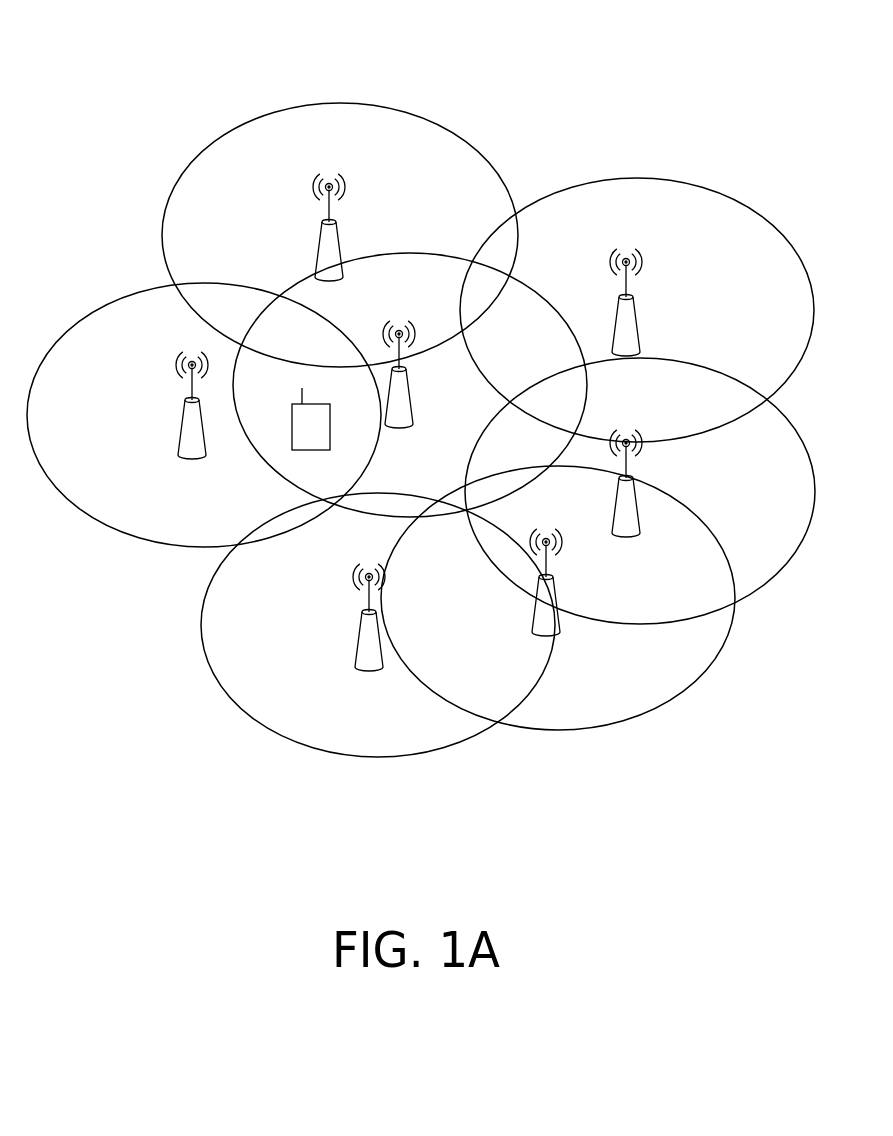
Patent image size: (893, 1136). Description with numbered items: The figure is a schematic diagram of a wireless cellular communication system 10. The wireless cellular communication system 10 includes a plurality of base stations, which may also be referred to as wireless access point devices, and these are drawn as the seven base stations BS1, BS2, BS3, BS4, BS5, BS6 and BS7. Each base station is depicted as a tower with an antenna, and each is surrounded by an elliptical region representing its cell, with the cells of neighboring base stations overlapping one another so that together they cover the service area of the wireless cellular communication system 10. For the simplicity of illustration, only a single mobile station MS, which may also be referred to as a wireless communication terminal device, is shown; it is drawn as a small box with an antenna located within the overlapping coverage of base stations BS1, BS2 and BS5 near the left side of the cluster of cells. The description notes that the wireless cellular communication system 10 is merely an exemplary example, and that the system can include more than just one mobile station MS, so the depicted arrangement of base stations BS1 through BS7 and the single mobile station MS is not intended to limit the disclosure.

The wireless cellular communication system 10 is at (420, 386).
The base station BS1 is at (204, 415).
The base station BS2 is at (340, 235).
The base station BS3 is at (637, 310).
The base station BS4 is at (640, 491).
The base station BS5 is at (410, 385).
The base station BS6 is at (378, 625).
The base station BS7 is at (558, 598).
The mobile station MS is at (292, 428).